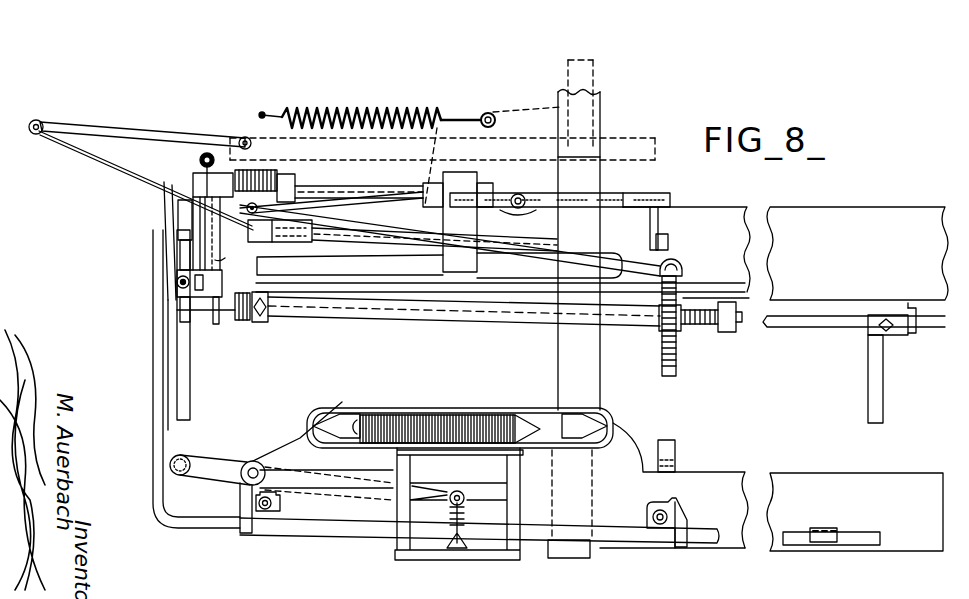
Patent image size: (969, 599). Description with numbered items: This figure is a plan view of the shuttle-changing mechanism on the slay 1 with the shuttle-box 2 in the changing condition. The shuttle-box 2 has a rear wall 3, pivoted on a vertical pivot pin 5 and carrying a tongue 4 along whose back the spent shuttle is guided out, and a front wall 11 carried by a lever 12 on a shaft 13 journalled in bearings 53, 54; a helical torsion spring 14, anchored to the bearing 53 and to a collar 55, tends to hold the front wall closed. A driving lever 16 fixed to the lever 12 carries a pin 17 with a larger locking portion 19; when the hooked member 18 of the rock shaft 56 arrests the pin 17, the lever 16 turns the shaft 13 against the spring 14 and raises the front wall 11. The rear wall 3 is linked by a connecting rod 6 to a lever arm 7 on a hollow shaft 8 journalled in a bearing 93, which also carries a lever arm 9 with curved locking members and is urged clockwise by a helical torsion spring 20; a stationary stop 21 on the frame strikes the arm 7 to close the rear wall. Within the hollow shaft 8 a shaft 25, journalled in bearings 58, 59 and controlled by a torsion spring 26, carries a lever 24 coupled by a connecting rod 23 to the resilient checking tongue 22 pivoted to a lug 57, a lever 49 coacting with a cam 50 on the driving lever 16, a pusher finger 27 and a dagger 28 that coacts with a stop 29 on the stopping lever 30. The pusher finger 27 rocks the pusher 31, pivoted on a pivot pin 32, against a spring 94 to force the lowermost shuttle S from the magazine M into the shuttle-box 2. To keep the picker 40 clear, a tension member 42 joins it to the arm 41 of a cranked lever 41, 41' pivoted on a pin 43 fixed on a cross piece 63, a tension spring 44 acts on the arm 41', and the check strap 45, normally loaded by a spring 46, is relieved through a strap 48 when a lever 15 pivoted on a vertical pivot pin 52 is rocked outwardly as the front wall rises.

The slay 1 is at (725, 218).
The shuttle-box 2 is at (360, 248).
The rear wall 3 is at (612, 252).
The tongue 4 is at (415, 250).
The vertical pivot pin 5 is at (258, 182).
The connecting rod 6 is at (681, 345).
The lever arm 7 is at (662, 360).
The hollow shaft 8 is at (300, 318).
The lever arm 9 is at (200, 312).
The front wall 11 is at (522, 278).
The lever 12 is at (462, 275).
The shaft 13 is at (352, 190).
The helical torsion spring 14 is at (290, 176).
The lever 15 is at (165, 208).
The driving lever 16 is at (205, 185).
The pin 17 is at (170, 268).
The hooked member 18 is at (153, 438).
The locking pin 19 is at (217, 266).
The helical torsion spring 20 is at (252, 322).
The stationary stop 21 is at (675, 446).
The checking and catching tongue 22 is at (260, 165).
The connecting rod 23 is at (205, 152).
The lever 24 is at (180, 296).
The shaft 25 is at (778, 322).
The torsion spring 26 is at (715, 334).
The pusher finger 27 is at (190, 396).
The dagger 28 is at (880, 407).
The stop 29 is at (872, 533).
The stopping lever 30 is at (822, 530).
The pusher 31 is at (348, 510).
The pivot pin 32 is at (253, 461).
The picker 40 is at (305, 243).
The arm of cranked lever 41 is at (137, 120).
The arm of cranked lever 41' is at (285, 85).
The tension member 42 is at (115, 165).
The pin 43 is at (245, 137).
The tension spring 44 is at (362, 112).
The check strap 45 is at (385, 205).
The spring 46 is at (484, 183).
The strap 48 is at (383, 195).
The lever 49 is at (183, 223).
The cam 50 is at (185, 252).
The vertical pivot pin 52 is at (177, 283).
The bearing 53 is at (226, 172).
The bearing 54 is at (612, 196).
The collar 55 is at (292, 195).
The rock shaft 56 is at (615, 545).
The lug 57 is at (522, 195).
The bearing 58 is at (692, 314).
The bearing 59 is at (903, 330).
The cross piece 63 is at (438, 115).
The bearing 93 is at (228, 312).
The spring 94 is at (464, 502).
The magazine M is at (332, 413).
The shuttle S is at (445, 416).